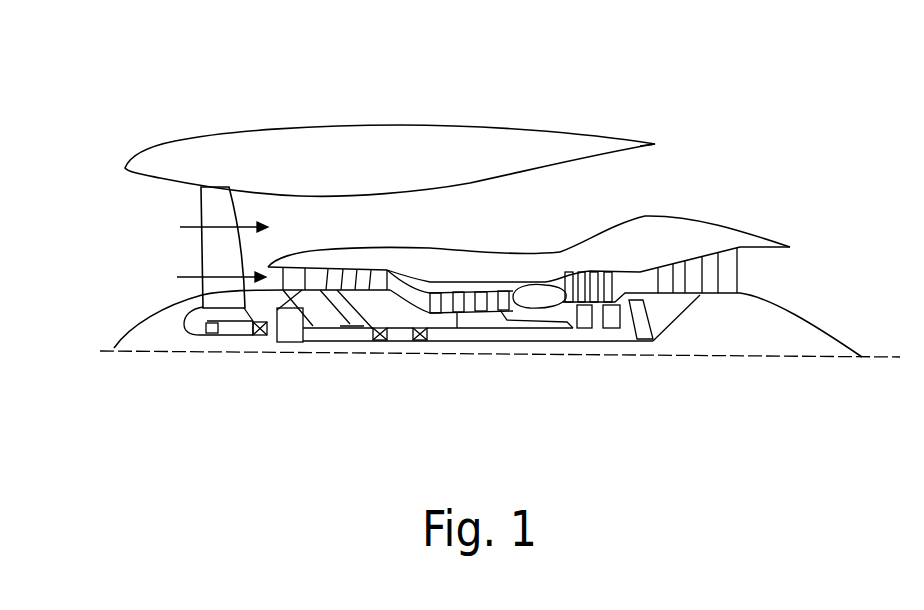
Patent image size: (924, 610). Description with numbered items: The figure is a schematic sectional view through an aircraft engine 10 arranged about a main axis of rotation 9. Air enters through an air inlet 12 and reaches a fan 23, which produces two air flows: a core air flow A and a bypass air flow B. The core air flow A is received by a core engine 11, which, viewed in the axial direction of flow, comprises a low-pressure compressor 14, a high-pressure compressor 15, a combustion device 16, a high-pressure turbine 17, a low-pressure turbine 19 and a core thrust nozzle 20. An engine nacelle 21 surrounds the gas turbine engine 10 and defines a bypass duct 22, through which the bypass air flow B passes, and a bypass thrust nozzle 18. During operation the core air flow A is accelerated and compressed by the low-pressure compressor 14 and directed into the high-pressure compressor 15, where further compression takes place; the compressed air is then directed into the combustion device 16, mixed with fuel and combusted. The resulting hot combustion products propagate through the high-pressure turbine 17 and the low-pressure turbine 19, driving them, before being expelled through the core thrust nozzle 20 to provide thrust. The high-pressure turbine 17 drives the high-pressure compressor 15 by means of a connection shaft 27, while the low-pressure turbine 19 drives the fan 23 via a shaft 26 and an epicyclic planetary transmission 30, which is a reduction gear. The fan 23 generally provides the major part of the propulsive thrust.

The main axis of rotation 9 is at (748, 356).
The aircraft engine 10 is at (176, 134).
The core engine 11 is at (553, 258).
The air inlet 12 is at (126, 201).
The low-pressure compressor 14 is at (345, 269).
The high-pressure compressor 15 is at (462, 284).
The combustion device 16 is at (537, 303).
The high-pressure turbine 17 is at (600, 272).
The bypass thrust nozzle 18 is at (755, 141).
The low-pressure turbine 19 is at (716, 290).
The core thrust nozzle 20 is at (805, 282).
The engine nacelle 21 is at (402, 125).
The bypass duct 22 is at (637, 183).
The fan 23 is at (207, 262).
The shaft 26 is at (447, 343).
The connection shaft 27 is at (498, 343).
The epicyclic planetary transmission 30 is at (291, 343).